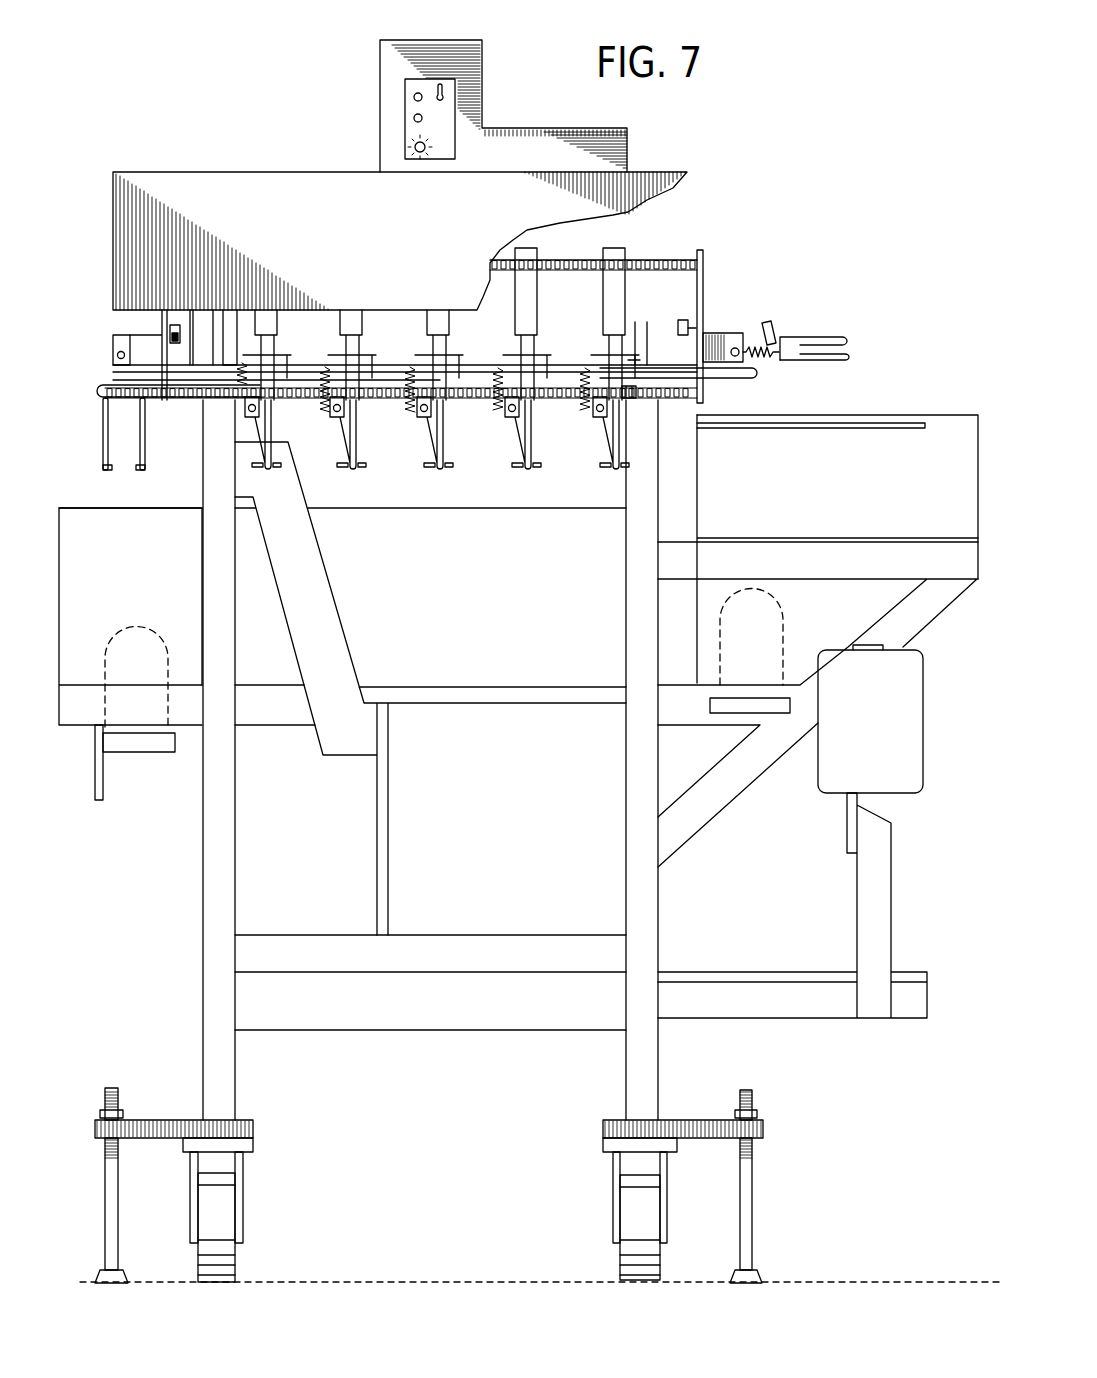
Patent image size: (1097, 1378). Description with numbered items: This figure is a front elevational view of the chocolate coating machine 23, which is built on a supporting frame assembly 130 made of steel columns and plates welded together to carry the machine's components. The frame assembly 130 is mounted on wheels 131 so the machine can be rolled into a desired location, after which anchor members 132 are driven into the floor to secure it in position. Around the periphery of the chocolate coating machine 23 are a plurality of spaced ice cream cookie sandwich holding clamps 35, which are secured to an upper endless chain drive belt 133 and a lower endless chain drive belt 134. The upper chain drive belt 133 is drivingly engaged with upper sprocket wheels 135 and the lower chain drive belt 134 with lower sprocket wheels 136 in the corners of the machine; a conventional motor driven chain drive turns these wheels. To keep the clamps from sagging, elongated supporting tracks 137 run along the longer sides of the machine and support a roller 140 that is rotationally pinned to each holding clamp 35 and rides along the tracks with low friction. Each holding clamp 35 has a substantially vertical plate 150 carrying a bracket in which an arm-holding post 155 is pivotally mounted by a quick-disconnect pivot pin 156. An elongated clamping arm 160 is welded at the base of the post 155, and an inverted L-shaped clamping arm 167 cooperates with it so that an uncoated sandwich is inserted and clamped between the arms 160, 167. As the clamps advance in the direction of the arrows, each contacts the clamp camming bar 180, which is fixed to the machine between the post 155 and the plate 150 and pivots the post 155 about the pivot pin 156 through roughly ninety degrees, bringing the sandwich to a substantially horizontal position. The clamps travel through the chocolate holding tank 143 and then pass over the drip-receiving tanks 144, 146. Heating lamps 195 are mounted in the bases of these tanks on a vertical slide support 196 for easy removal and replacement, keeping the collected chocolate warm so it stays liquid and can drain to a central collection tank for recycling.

The chocolate coating machine 23 is at (732, 290).
The ice cream cookie sandwich holding clamp 35 is at (112, 360).
The supporting frame assembly 130 is at (240, 919).
The wheels 131 is at (240, 1258).
The anchor members 132 is at (118, 1228).
The upper endless chain drive belt 133 is at (685, 262).
The lower endless chain drive belt 134 is at (528, 400).
The upper sprocket wheels 135 is at (656, 258).
The lower sprocket wheels 136 is at (642, 397).
The supporting tracks 137 is at (193, 330).
The roller 140 is at (173, 325).
The chocolate holding tank 143 is at (942, 418).
The drip-receiving tank 144 is at (809, 622).
The drip-receiving tank 146 is at (106, 570).
The plate 150 is at (704, 388).
The arm-holding post 155 is at (767, 323).
The pivot pin 156 is at (734, 348).
The clamping arm 160 is at (832, 340).
The inverted L-shaped clamping arm 167 is at (838, 360).
The clamp camming bar 180 is at (757, 372).
The heating lamps 195 is at (138, 625).
The vertical slide support 196 is at (103, 786).